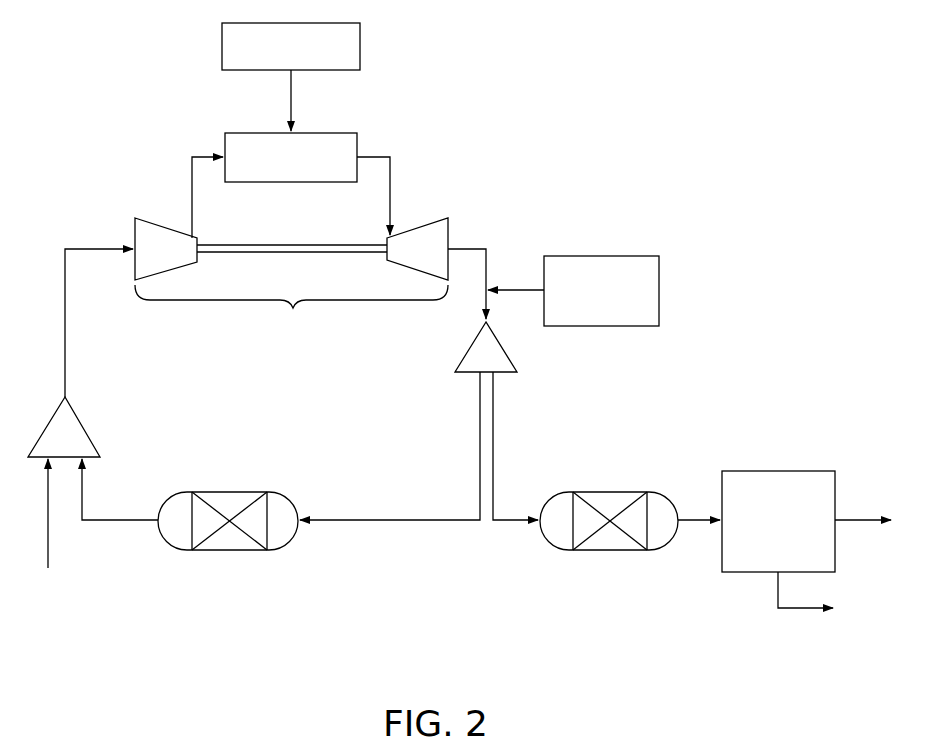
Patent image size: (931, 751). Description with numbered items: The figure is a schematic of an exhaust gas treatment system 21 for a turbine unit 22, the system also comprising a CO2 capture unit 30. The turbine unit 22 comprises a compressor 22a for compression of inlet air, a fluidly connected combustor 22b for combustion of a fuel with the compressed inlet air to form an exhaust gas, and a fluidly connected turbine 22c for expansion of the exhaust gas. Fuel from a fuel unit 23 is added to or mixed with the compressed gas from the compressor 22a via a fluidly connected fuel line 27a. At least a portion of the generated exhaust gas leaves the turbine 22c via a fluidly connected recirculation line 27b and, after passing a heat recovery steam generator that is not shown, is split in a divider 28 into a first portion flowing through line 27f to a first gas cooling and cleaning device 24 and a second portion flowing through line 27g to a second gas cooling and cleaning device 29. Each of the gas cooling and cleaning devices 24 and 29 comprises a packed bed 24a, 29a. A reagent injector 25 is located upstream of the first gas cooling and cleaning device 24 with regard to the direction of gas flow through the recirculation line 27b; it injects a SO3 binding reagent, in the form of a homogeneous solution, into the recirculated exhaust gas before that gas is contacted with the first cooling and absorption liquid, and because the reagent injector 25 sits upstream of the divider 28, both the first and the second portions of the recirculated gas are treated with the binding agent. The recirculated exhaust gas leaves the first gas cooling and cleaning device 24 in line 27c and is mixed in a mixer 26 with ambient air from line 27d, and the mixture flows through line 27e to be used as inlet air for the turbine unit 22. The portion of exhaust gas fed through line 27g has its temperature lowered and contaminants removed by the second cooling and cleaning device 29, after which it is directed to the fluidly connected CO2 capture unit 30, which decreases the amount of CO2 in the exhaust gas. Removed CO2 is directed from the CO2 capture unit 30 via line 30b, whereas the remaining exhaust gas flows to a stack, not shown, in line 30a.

The exhaust gas treatment system 21 is at (690, 224).
The turbine unit 22 is at (291, 293).
The compressor 22a is at (157, 242).
The combustor 22b is at (357, 141).
The turbine 22c is at (425, 242).
The fuel unit 23 is at (360, 46).
The first gas cooling and cleaning device 24 is at (283, 492).
The packed bed 24a is at (228, 538).
The reagent injector 25 is at (602, 256).
The mixer 26 is at (70, 433).
The fuel line 27a is at (290, 95).
The recirculation line 27b is at (488, 262).
The line 27c is at (122, 518).
The line 27d is at (48, 548).
The line 27e is at (65, 360).
The line 27f is at (392, 520).
The line 27g is at (493, 445).
The divider 28 is at (474, 370).
The second gas cooling and cleaning device 29 is at (668, 492).
The packed bed 29a is at (608, 538).
The CO2 capture unit 30 is at (778, 471).
The line 30a is at (864, 518).
The line 30b is at (798, 610).